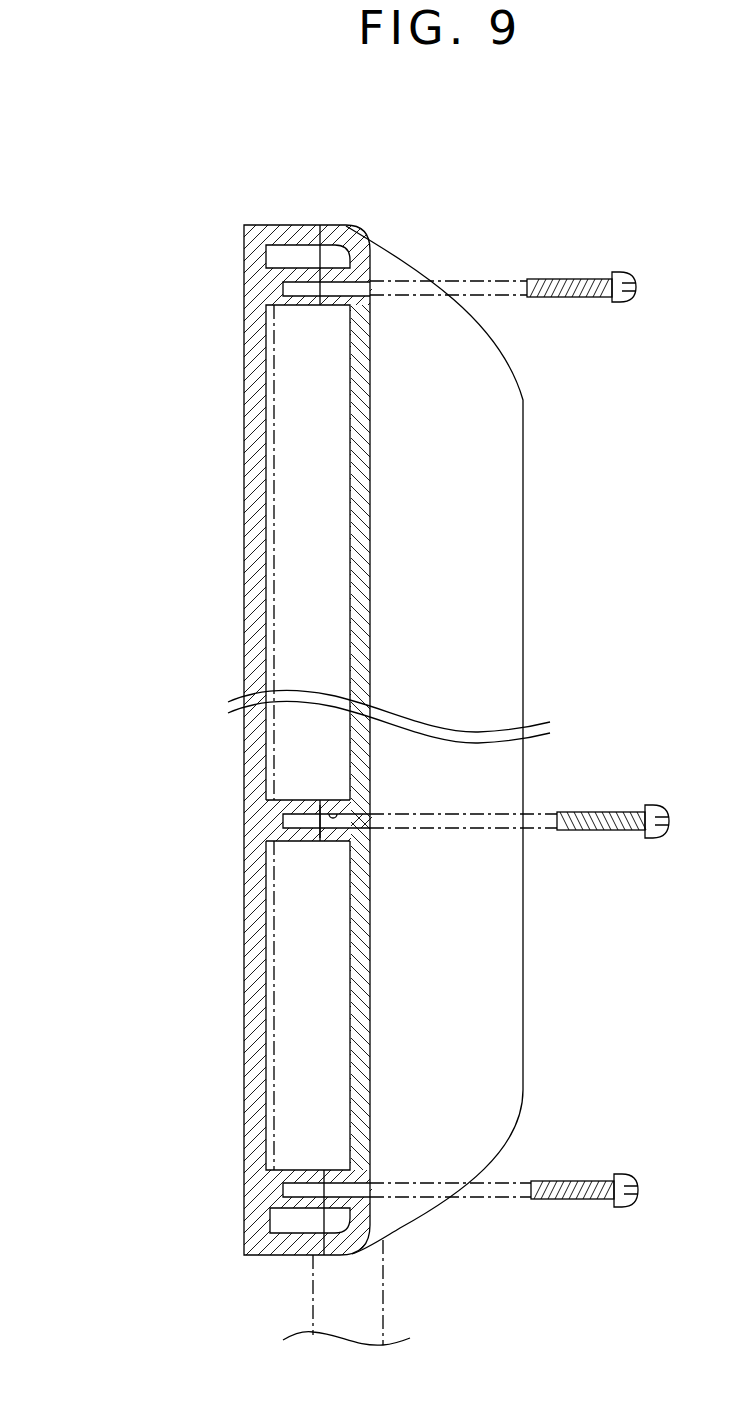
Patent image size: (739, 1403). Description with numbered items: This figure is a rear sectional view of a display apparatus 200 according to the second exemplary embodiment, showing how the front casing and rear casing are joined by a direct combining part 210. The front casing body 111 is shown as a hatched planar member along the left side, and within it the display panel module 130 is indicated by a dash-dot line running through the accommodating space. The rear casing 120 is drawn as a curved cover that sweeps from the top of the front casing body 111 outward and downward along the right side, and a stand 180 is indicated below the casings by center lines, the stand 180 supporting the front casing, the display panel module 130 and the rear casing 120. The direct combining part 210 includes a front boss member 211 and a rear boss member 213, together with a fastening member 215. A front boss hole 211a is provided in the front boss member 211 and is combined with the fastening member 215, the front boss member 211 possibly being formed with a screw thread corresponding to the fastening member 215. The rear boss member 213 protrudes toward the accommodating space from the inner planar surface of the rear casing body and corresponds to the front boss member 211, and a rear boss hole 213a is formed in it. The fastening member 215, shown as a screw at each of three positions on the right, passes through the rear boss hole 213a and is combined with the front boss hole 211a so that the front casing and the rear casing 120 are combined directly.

The display apparatus 200 is at (147, 203).
The front casing body 111 is at (244, 319).
The rear casing 120 is at (524, 985).
The display panel module 130 is at (291, 562).
The stand 180 is at (372, 1294).
The direct combining part 210 is at (123, 888).
The front boss member 211 is at (300, 835).
The front boss hole 211a is at (302, 817).
The rear boss member 213 is at (333, 840).
The rear boss hole 213a is at (333, 810).
The fastening member 215 is at (567, 830).